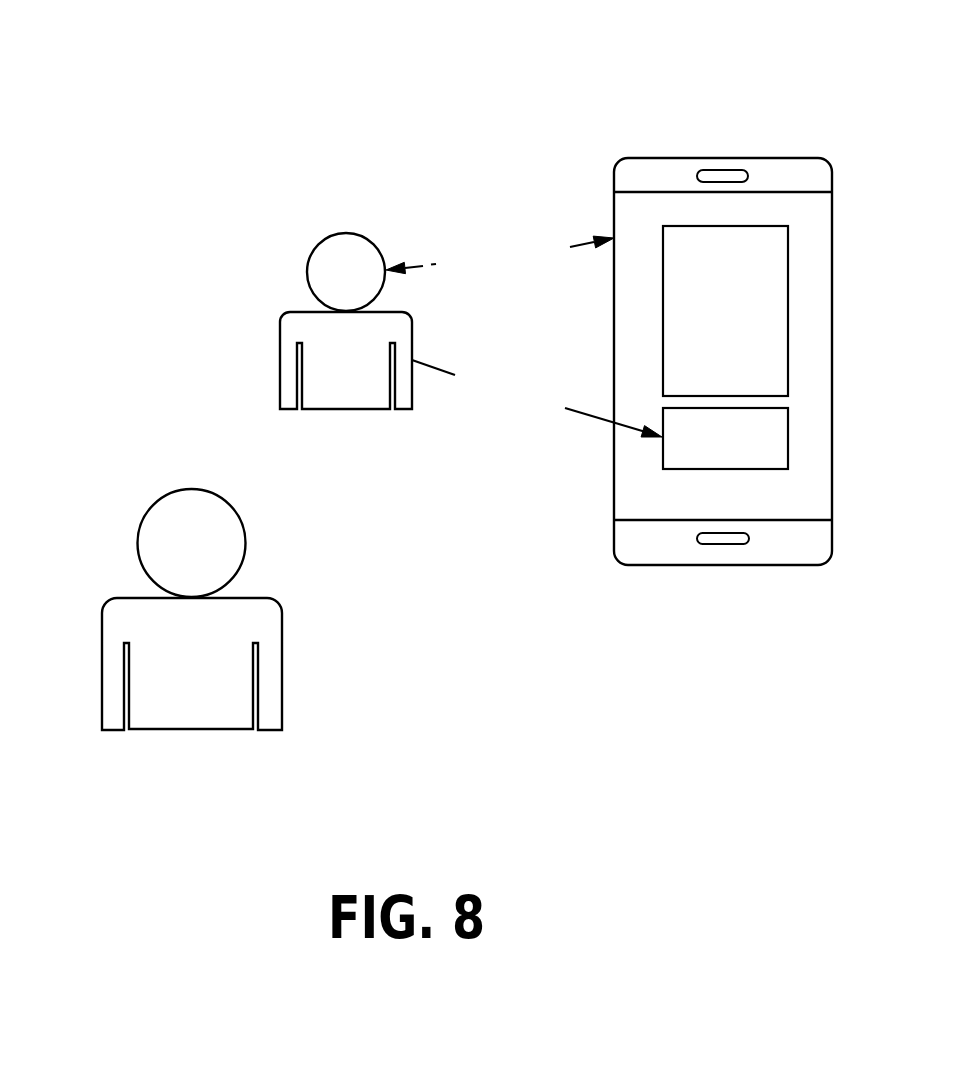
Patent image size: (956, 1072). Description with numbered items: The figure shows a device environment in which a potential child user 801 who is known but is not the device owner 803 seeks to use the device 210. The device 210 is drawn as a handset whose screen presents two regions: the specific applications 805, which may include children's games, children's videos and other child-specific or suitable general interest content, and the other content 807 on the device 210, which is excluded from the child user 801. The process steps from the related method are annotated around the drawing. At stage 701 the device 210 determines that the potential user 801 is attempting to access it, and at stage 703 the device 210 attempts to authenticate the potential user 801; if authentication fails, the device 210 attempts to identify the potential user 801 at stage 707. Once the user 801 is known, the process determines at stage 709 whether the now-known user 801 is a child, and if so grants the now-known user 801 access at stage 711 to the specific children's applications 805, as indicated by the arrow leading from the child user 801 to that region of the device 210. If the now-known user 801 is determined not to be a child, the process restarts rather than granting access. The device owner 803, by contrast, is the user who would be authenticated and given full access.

The device 210 is at (636, 168).
The child user 801 is at (320, 254).
The device owner 803 is at (130, 607).
The specific applications 805 is at (702, 325).
The other content 807 is at (702, 452).
The stage 701 is at (502, 167).
The stage 703 is at (503, 200).
The stage 707 is at (461, 258).
The stage 709 is at (542, 271).
The stage 711 is at (537, 398).